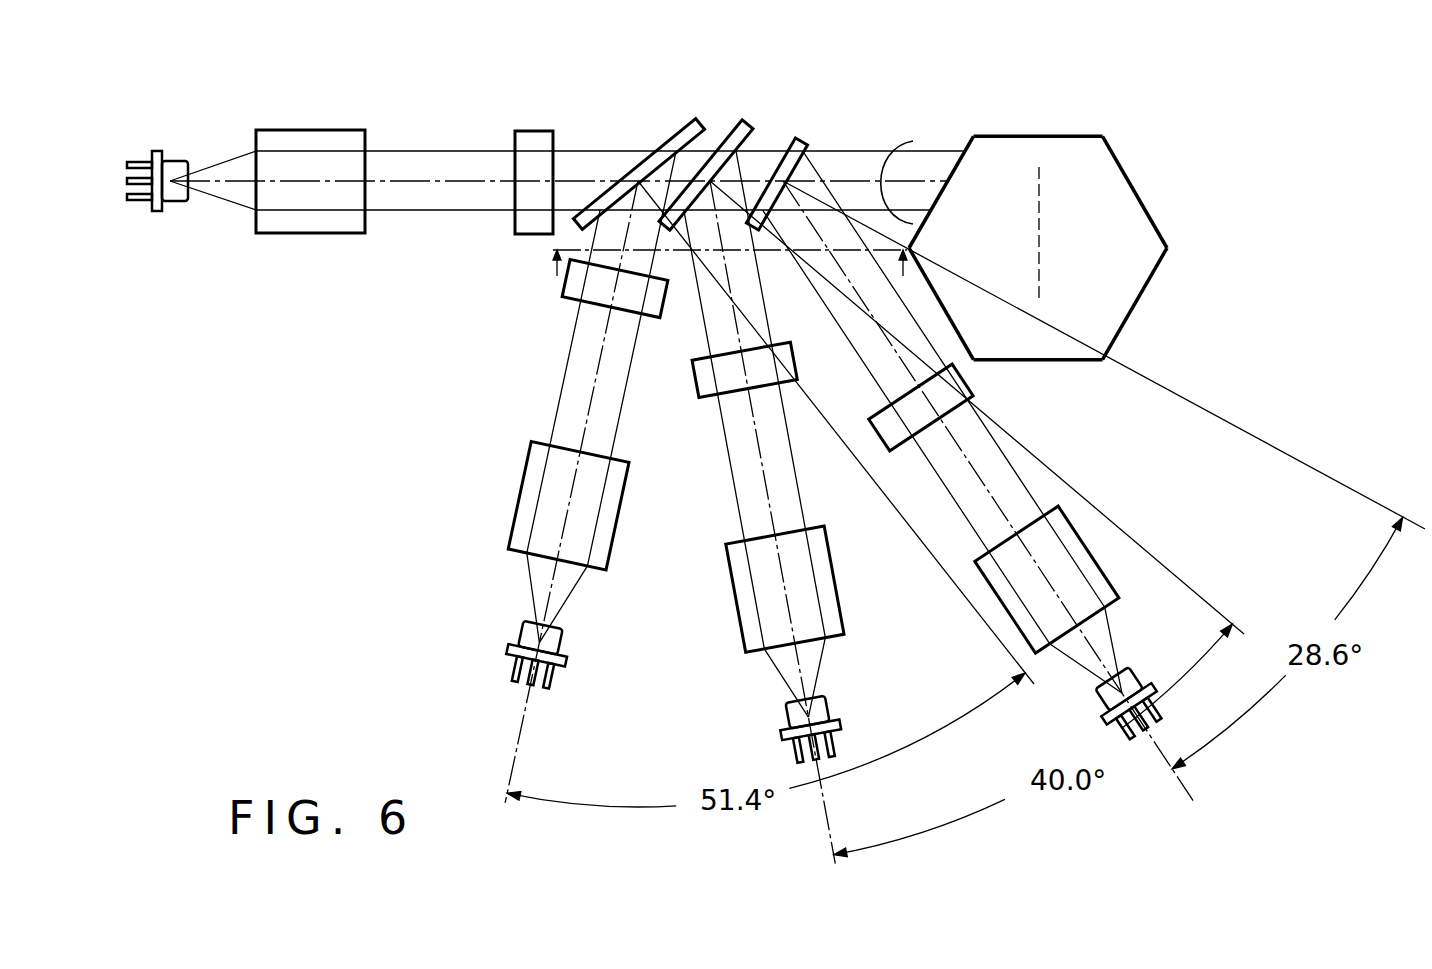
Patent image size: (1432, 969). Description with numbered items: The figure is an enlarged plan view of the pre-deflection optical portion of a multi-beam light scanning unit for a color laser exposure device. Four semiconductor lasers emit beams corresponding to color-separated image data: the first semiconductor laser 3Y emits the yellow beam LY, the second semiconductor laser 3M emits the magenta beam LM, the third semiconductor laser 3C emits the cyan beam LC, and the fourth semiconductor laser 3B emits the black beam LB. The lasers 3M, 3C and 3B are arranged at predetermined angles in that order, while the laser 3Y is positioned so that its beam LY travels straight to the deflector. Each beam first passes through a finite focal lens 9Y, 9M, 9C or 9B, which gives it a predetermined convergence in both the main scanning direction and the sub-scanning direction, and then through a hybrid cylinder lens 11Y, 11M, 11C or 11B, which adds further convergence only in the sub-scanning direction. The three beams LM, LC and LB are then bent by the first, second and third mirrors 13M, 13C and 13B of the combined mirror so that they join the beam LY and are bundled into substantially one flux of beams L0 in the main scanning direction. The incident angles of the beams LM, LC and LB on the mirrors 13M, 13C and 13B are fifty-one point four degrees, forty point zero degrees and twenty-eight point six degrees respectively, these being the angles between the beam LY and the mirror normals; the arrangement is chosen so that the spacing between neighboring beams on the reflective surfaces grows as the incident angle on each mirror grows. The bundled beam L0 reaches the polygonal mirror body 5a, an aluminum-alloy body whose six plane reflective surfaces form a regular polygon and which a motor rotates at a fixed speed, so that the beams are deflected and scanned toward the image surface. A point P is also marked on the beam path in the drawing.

The first semiconductor laser 3Y is at (170, 159).
The finite focal lens 9Y is at (311, 131).
The hybrid cylinder lens 11Y is at (528, 132).
The first laser beam LY is at (430, 206).
The first mirror 13M is at (671, 130).
The second mirror 13C is at (750, 130).
The third mirror 13B is at (810, 138).
The bundled laser beam L0 is at (893, 143).
The polygonal mirror body 5a is at (1046, 164).
The reference point P is at (728, 276).
The second laser beam LM is at (565, 386).
The hybrid cylinder lens 11M is at (573, 294).
The finite focal lens 9M is at (514, 508).
The second semiconductor laser 3M is at (511, 634).
The third laser beam LC is at (738, 497).
The hybrid cylinder lens 11C is at (711, 394).
The finite focal lens 9C is at (743, 622).
The third semiconductor laser 3C is at (791, 722).
The fourth laser beam LB is at (1005, 460).
The hybrid cylinder lens 11B is at (884, 417).
The finite focal lens 9B is at (1005, 595).
The fourth semiconductor laser 3B is at (1113, 700).